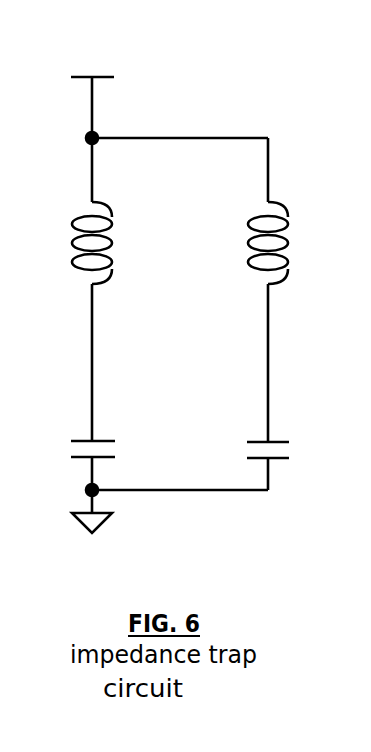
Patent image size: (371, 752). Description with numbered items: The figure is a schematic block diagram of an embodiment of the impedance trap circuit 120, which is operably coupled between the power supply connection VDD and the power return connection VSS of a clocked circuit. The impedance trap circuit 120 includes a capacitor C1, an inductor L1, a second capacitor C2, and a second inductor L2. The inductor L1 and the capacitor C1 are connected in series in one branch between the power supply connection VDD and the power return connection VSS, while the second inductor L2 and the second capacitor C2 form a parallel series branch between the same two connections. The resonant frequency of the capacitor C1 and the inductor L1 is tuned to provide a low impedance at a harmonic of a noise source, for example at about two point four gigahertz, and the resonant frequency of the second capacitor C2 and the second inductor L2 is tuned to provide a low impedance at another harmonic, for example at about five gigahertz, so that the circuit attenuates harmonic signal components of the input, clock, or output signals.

The impedance trap circuit 120 is at (185, 372).
The inductor L1 is at (66, 243).
The second inductor L2 is at (298, 243).
The capacitor C1 is at (66, 448).
The second capacitor C2 is at (300, 443).
The power supply connection VDD is at (93, 59).
The power return connection VSS is at (111, 541).